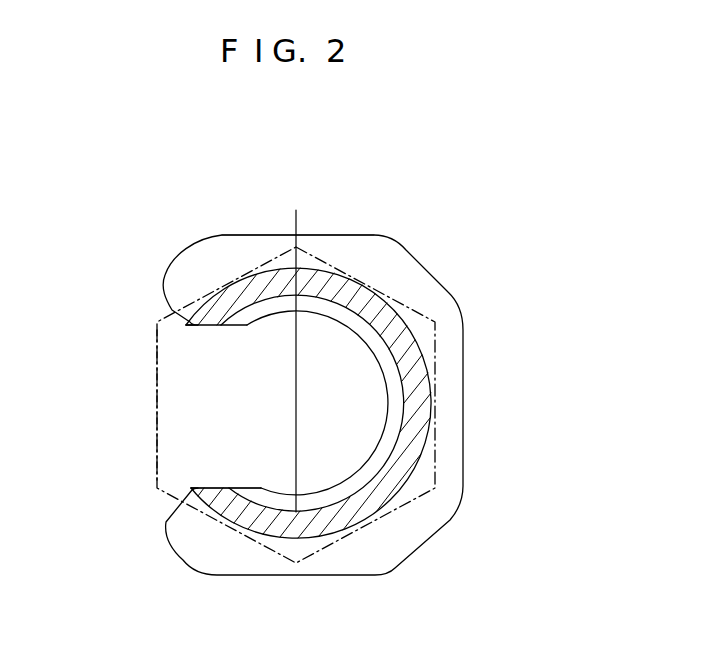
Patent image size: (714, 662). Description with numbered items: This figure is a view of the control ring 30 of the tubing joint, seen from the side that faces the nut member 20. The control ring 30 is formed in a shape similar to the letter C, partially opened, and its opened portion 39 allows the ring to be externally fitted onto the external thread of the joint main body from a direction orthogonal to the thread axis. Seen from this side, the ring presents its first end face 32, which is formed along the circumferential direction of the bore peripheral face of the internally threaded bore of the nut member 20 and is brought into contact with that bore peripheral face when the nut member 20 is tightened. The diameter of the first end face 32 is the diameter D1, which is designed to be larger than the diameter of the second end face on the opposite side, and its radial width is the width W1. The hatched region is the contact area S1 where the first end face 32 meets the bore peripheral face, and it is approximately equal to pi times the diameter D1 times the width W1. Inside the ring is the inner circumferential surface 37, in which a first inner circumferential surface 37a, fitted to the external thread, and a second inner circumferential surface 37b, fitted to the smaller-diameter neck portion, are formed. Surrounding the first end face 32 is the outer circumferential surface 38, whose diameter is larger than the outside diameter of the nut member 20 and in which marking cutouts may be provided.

The nut member 20 is at (156, 376).
The control ring 30 is at (229, 233).
The first end face 32 is at (464, 352).
The inner circumferential surface 37 is at (306, 403).
The first inner circumferential surface 37a is at (378, 364).
The second inner circumferential surface 37b is at (270, 323).
The outer circumferential surface 38 is at (395, 245).
The opened portion 39 is at (212, 487).
The width of the first end face W1 is at (296, 312).
The diameter of the first end face D1 is at (296, 295).
The contact area S1 is at (447, 287).